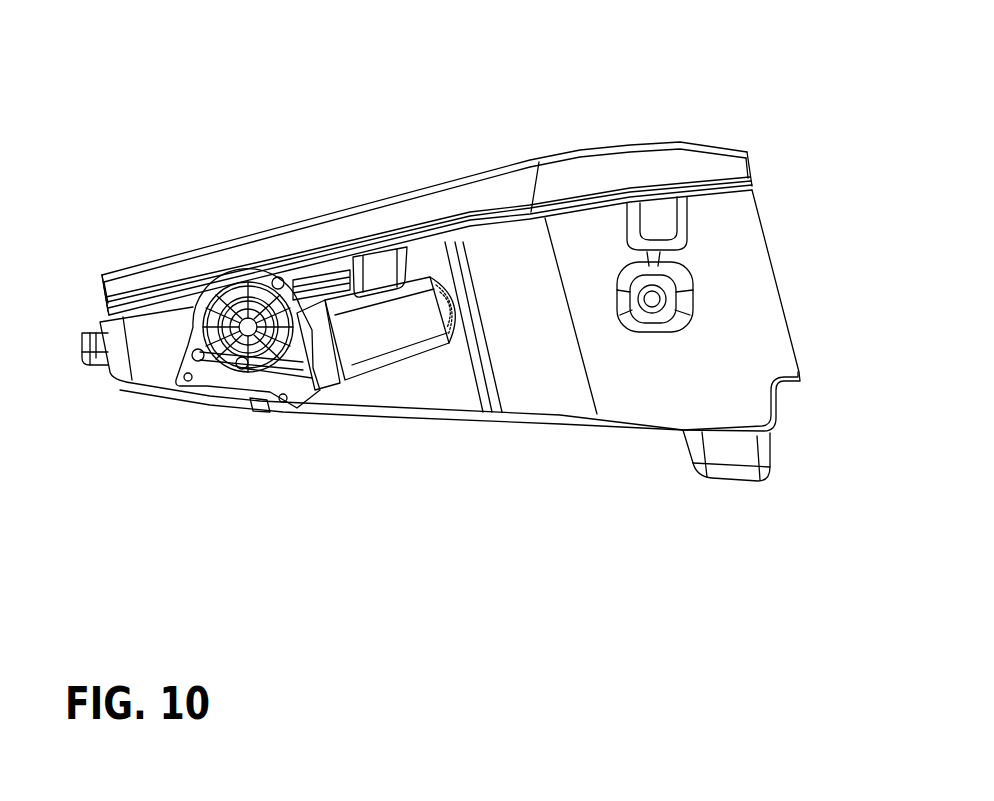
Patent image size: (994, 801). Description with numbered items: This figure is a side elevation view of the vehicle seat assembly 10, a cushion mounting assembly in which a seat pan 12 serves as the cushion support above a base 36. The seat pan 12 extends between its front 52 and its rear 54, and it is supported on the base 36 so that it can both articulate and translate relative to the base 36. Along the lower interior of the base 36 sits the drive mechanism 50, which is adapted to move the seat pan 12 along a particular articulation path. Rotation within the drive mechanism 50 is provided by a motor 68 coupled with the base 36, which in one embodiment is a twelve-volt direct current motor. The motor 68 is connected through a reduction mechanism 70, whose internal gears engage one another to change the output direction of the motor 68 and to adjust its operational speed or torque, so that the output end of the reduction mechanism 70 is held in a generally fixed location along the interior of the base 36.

The vehicle seat assembly 10 is at (649, 112).
The seat pan 12 is at (462, 200).
The front 52 is at (752, 163).
The rear 54 is at (102, 292).
The drive mechanism 50 is at (132, 415).
The base 36 is at (742, 333).
The reduction mechanism 70 is at (217, 382).
The motor 68 is at (363, 350).